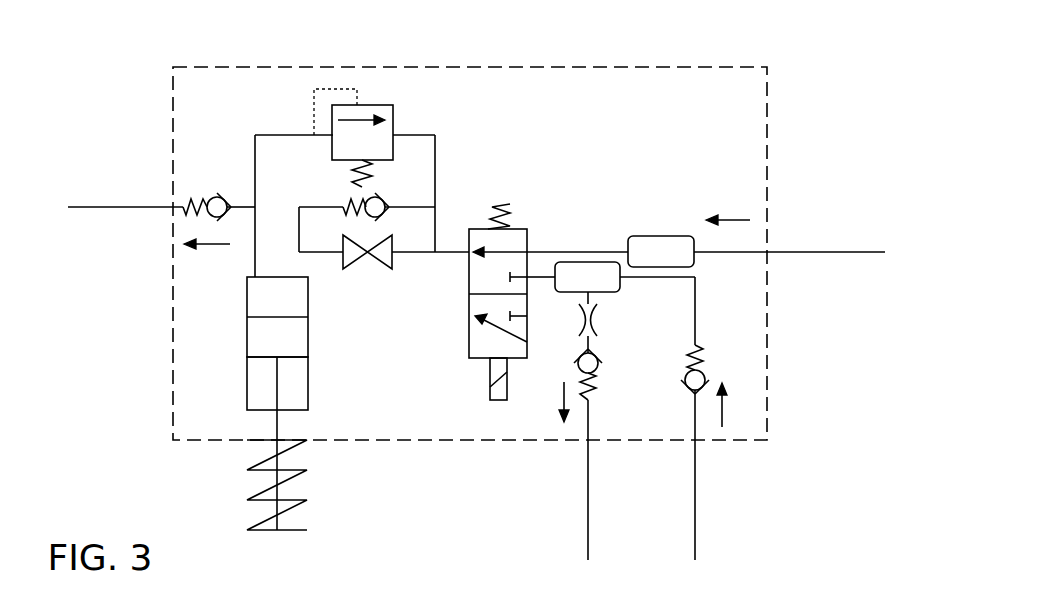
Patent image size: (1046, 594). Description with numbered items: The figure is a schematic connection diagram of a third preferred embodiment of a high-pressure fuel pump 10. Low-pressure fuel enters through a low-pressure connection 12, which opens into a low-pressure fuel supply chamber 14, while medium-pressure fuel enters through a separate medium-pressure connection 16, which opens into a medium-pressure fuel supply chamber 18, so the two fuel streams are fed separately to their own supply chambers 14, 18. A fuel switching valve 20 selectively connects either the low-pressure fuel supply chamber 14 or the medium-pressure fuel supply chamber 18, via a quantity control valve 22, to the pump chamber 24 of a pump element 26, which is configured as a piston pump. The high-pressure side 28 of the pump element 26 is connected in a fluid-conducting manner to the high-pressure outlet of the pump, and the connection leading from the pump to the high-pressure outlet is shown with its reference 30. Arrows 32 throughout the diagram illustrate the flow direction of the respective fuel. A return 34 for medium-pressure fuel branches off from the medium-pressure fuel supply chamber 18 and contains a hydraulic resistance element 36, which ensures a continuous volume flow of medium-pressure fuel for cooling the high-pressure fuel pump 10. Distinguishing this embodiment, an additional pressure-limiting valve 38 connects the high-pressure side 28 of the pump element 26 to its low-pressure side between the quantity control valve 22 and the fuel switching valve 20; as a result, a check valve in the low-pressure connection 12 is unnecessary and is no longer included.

The high-pressure fuel pump 10 is at (630, 64).
The low-pressure connection 12 is at (818, 248).
The low-pressure fuel supply chamber 14 is at (659, 242).
The medium-pressure connection 16 is at (698, 502).
The medium-pressure fuel supply chamber 18 is at (592, 266).
The fuel switching valve 20 is at (467, 339).
The quantity control valve 22 is at (386, 257).
The pump chamber 24 is at (296, 300).
The pump element 26 is at (311, 382).
The high-pressure side 28 is at (252, 258).
The outlet line 30 is at (133, 207).
The arrows 32 is at (212, 248).
The return 34 is at (591, 502).
The hydraulic resistance element 36 is at (596, 319).
The pressure-limiting valve 38 is at (361, 108).